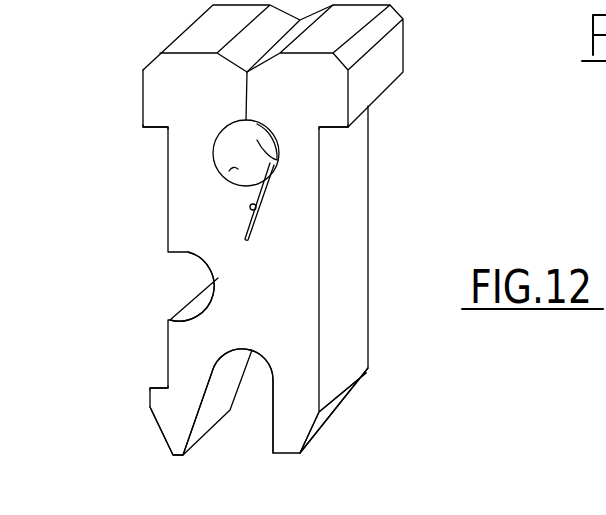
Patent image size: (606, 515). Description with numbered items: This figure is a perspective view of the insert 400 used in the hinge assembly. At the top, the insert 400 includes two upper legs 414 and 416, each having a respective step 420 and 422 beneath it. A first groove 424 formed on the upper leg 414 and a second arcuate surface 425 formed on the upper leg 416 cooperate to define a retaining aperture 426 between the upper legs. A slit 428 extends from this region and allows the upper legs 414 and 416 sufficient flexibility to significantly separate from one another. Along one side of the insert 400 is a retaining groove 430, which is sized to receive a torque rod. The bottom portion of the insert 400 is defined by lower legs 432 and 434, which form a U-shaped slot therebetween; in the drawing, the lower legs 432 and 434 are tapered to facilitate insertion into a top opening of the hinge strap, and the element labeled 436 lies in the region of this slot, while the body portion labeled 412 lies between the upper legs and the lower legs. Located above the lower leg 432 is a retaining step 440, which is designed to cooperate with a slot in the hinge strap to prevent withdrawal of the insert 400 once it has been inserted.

The insert 400 is at (470, 224).
The body 412 is at (302, 317).
The upper leg 414 is at (160, 85).
The upper leg 416 is at (330, 100).
The step 420 is at (150, 130).
The step 422 is at (336, 129).
The first groove 424 is at (222, 173).
The second arcuate surface 425 is at (280, 162).
The retaining aperture 426 is at (233, 148).
The slit 428 is at (282, 196).
The retaining groove 430 is at (197, 303).
The lower leg 432 is at (173, 427).
The lower leg 434 is at (300, 410).
The slot 436 is at (273, 432).
The retaining step 440 is at (165, 386).